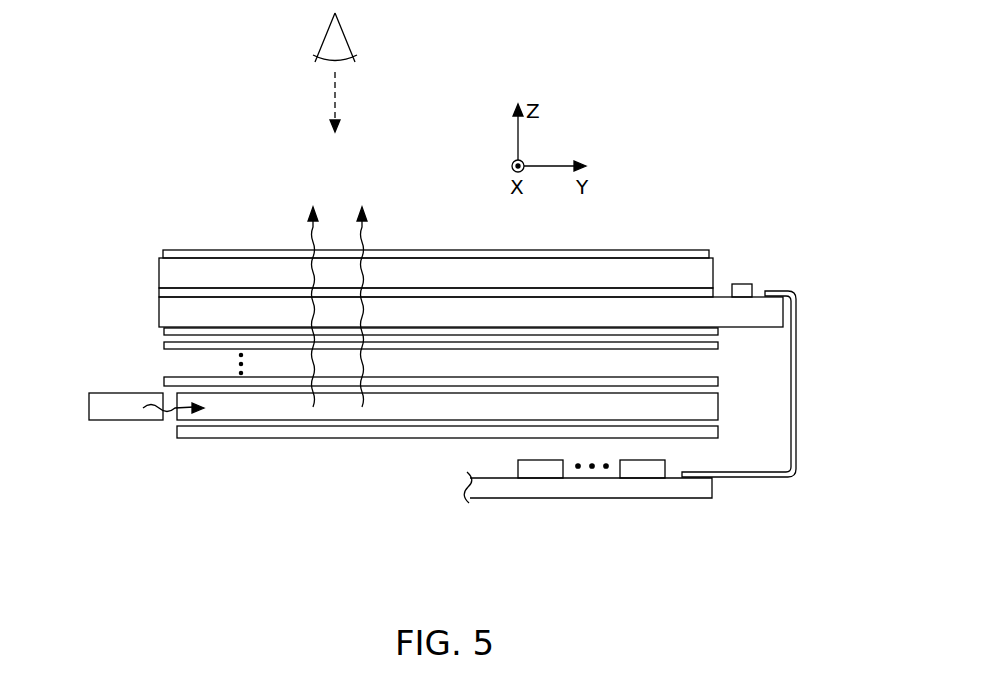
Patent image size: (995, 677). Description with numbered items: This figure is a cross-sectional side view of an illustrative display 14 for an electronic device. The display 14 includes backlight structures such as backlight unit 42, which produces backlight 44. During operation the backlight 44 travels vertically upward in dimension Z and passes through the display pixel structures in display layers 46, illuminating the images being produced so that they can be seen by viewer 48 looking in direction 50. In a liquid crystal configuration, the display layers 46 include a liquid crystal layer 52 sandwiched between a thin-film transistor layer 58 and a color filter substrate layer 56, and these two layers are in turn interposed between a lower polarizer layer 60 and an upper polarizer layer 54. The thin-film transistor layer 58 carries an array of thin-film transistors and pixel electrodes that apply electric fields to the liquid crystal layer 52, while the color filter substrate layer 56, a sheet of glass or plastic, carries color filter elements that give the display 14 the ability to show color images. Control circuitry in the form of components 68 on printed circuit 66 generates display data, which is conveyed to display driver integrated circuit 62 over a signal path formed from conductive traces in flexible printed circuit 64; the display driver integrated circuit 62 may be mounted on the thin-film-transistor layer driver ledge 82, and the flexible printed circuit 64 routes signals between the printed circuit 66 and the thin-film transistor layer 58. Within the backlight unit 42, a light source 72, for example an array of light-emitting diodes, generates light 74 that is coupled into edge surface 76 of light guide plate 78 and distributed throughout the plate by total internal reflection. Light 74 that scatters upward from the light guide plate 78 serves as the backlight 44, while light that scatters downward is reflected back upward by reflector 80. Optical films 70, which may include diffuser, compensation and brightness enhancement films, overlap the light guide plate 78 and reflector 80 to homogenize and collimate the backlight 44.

The display 14 is at (742, 101).
The backlight unit 42 is at (730, 340).
The backlight 44 is at (362, 234).
The display layers 46 is at (127, 247).
The viewer 48 is at (348, 37).
The direction 50 is at (335, 107).
The liquid crystal layer 52 is at (211, 292).
The upper polarizer layer 54 is at (177, 252).
The color filter substrate layer 56 is at (159, 267).
The thin-film transistor layer 58 is at (159, 312).
The lower polarizer layer 60 is at (163, 331).
The display driver integrated circuit 62 is at (752, 288).
The flexible printed circuit 64 is at (797, 331).
The printed circuit 66 is at (560, 497).
The components 68 is at (625, 465).
The optical films 70 is at (175, 379).
The light source 72 is at (94, 420).
The light 74 is at (156, 405).
The edge surface 76 is at (177, 416).
The light guide plate 78 is at (237, 417).
The reflector 80 is at (294, 437).
The thin-film-transistor layer driver ledge 82 is at (792, 265).